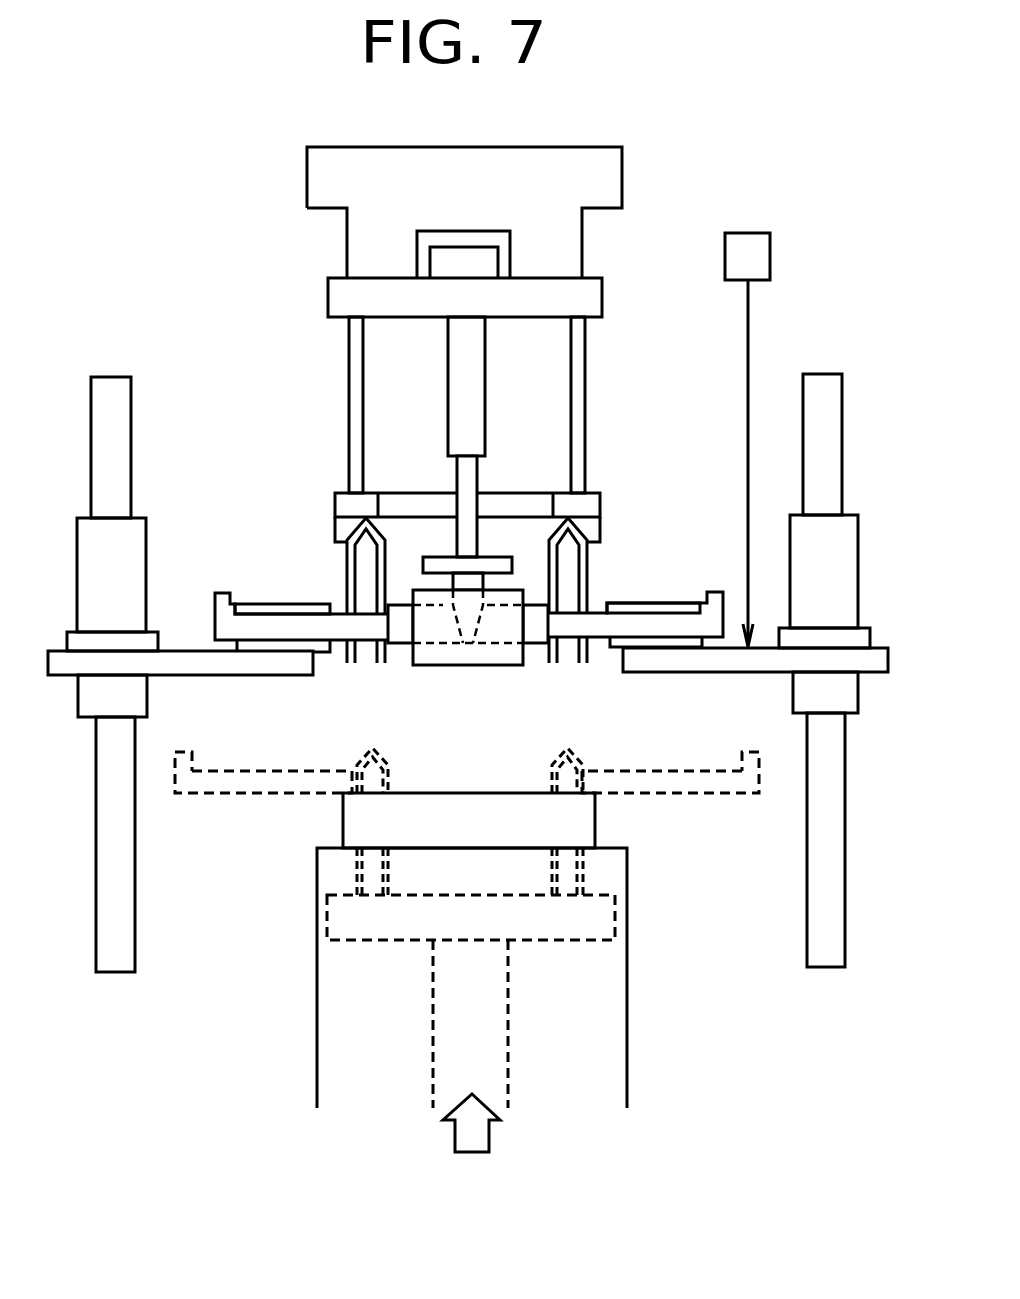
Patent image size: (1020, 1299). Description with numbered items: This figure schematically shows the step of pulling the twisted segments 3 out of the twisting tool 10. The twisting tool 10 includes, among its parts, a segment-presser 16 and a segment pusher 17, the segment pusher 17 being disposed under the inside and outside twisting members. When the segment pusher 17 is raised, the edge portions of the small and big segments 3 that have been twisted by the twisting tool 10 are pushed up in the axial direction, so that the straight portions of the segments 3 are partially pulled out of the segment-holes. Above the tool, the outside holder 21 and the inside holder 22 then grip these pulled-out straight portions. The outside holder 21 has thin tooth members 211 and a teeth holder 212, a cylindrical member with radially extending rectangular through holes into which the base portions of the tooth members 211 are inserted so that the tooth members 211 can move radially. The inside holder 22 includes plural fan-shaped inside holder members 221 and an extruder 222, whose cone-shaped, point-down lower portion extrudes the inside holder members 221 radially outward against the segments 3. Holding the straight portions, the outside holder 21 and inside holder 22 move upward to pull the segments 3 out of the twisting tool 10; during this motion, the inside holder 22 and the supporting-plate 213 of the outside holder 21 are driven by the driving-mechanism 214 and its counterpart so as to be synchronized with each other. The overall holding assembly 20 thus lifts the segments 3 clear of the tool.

The segments 3 is at (590, 568).
The twisting tool 10 is at (299, 911).
The segment-presser 16 is at (577, 505).
The segment pusher 17 is at (592, 916).
The transfer unit 20 is at (254, 475).
The outside holder 21 is at (628, 600).
The inside holder 22 is at (519, 669).
The tooth members 211 is at (260, 623).
The teeth holder 212 is at (288, 604).
The supporting-plate 213 is at (226, 676).
The driving-mechanism 214 is at (770, 255).
The inside holder members 221 is at (399, 650).
The extruder 222 is at (466, 665).